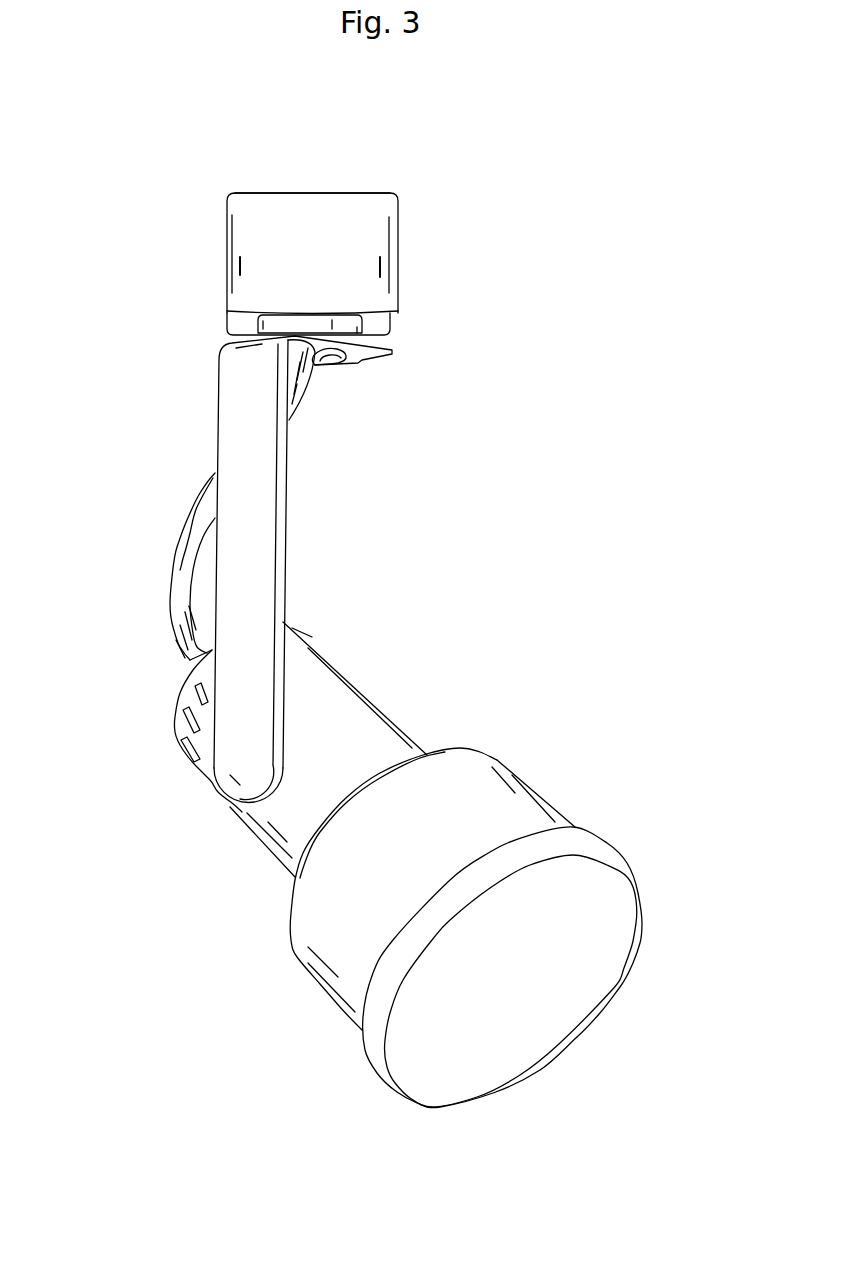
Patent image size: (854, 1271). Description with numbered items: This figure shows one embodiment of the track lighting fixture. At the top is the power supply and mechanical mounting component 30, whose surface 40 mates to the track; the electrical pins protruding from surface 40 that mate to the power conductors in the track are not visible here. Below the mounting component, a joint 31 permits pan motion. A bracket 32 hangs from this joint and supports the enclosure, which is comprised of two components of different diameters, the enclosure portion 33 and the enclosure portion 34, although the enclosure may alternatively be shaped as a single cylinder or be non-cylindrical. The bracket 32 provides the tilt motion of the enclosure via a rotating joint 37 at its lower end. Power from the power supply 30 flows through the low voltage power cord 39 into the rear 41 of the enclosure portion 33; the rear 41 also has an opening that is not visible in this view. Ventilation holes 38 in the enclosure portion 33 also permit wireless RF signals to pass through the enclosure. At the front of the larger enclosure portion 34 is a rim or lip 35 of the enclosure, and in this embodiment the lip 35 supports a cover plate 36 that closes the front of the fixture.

The power supply and mechanical mounting component 30 is at (327, 222).
The joint 31 is at (313, 327).
The bracket 32 is at (248, 540).
The enclosure portion 33 is at (345, 720).
The enclosure portion 34 is at (455, 793).
The rim or lip of the enclosure 35 is at (605, 852).
The cover plate 36 is at (553, 953).
The rotating joint 37 is at (238, 762).
The ventilation holes 38 is at (188, 725).
The low voltage power cord 39 is at (185, 576).
The surface 40 is at (287, 192).
The rear of the enclosure 41 is at (173, 683).